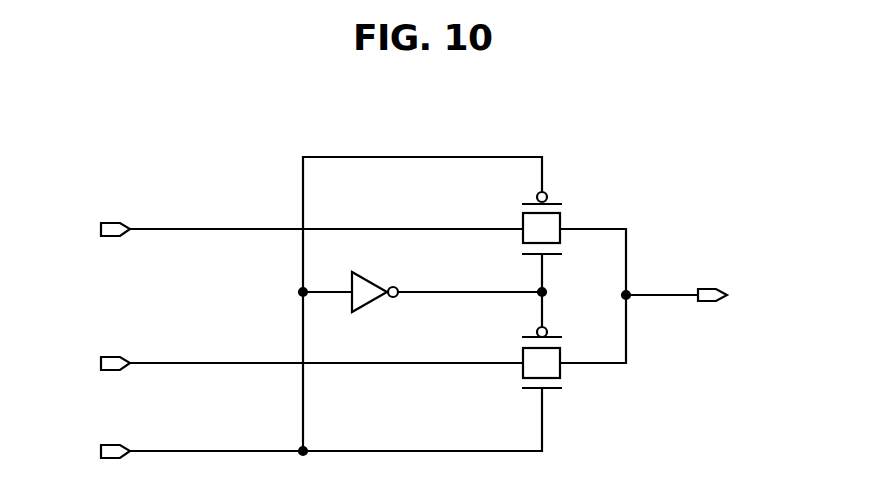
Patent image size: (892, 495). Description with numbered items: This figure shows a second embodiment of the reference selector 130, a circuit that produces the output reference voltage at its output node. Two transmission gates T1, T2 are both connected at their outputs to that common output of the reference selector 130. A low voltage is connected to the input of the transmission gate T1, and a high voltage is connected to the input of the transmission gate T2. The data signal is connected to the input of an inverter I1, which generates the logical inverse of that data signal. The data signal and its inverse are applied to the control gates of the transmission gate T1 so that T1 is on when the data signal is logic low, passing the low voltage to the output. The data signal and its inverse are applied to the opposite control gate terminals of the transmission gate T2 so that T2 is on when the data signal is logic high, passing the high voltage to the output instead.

The reference selector 130 is at (588, 127).
The transmission gate T1 is at (561, 223).
The transmission gate T2 is at (561, 357).
The inverter I1 is at (375, 307).